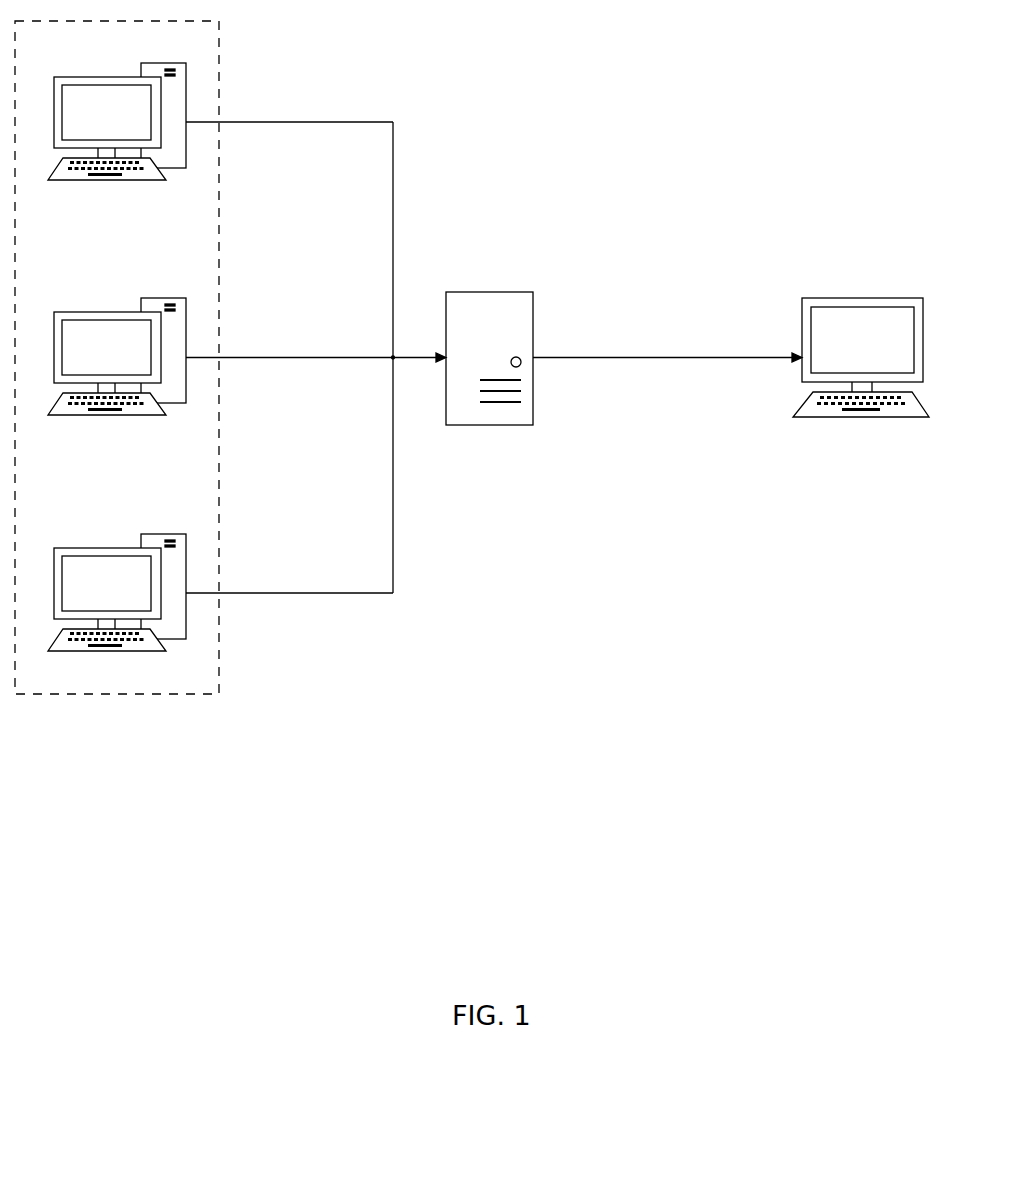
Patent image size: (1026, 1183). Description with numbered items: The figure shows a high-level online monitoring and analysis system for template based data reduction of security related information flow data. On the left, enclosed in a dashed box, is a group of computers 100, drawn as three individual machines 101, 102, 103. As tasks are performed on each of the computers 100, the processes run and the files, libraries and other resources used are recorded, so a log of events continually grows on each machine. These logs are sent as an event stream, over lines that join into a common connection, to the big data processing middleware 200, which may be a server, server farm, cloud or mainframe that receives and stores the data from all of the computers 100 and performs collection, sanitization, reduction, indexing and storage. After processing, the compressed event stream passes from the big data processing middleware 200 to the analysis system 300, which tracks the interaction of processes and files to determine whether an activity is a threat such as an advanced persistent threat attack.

The group of computers 100 is at (63, 50).
The user terminal 101 is at (117, 140).
The user terminal 102 is at (117, 375).
The user terminal 103 is at (117, 611).
The big data processing middleware 200 is at (489, 373).
The analysis system 300 is at (861, 376).